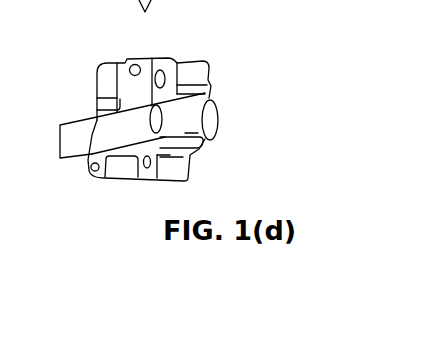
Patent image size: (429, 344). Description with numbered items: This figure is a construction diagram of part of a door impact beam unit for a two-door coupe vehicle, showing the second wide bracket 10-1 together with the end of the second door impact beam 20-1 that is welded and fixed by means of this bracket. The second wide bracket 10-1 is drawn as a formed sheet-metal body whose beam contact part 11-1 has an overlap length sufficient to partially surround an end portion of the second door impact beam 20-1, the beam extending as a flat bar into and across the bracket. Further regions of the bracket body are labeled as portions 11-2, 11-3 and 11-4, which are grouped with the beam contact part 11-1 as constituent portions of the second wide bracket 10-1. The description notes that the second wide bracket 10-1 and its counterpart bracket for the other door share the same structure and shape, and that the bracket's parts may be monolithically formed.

The second wide bracket 10-1 is at (254, 125).
The beam contact part 11-1 is at (220, 176).
The upper flange portion 11-2 is at (128, 93).
The side flange portion 11-3 is at (158, 99).
The rib portion 11-4 is at (183, 160).
The second door impact beam 20-1 is at (67, 132).